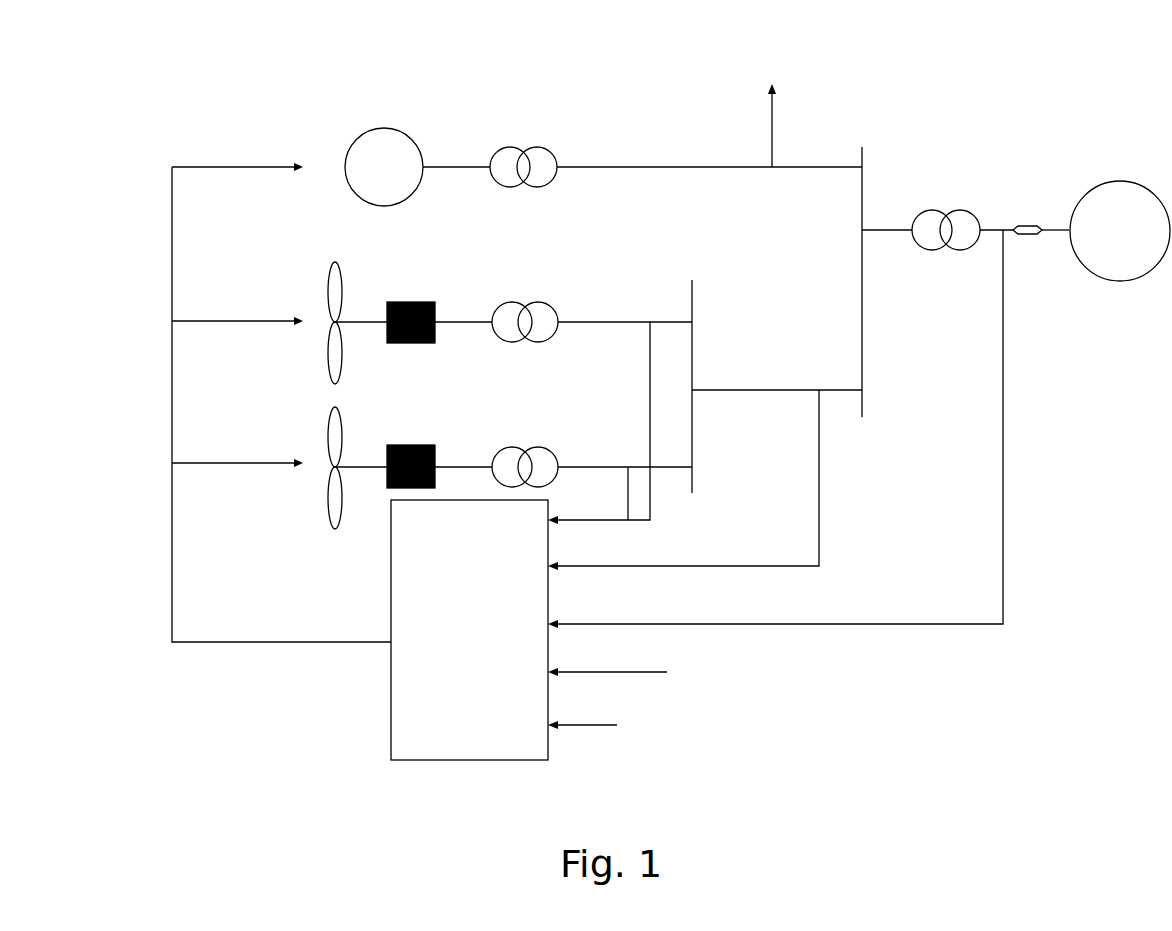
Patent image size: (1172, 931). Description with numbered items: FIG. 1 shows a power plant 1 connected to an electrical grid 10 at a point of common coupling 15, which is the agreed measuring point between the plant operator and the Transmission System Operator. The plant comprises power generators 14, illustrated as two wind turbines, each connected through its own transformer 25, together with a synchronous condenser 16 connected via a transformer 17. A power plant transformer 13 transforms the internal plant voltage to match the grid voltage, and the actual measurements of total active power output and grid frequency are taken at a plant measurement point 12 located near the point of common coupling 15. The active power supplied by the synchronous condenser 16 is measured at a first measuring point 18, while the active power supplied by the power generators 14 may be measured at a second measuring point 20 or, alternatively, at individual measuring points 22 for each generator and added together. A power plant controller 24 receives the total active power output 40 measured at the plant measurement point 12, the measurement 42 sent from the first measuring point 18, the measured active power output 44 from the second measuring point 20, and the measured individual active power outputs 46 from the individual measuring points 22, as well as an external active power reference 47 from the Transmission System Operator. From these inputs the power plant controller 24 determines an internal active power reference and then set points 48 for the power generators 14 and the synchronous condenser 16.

The power plant 1 is at (146, 84).
The electrical grid 10 is at (1135, 182).
The plant measurement point 12 is at (1010, 230).
The power plant transformer 13 is at (960, 210).
The power generators 14 is at (420, 302).
The point of common coupling 15 is at (1025, 238).
The synchronous condenser 16 is at (383, 128).
The transformer 17 is at (525, 147).
The first measuring point 18 is at (777, 167).
The second measuring point 20 is at (818, 390).
The individual measuring points 22 is at (648, 325).
The power plant controller 24 is at (435, 678).
The transformers 25 is at (525, 328).
The total active power output 40 is at (912, 625).
The measurement 42 is at (768, 112).
The measured active power output 44 is at (821, 520).
The measured individual active power outputs 46 is at (590, 522).
The external active power reference 47 is at (572, 726).
The set points 48 is at (172, 488).